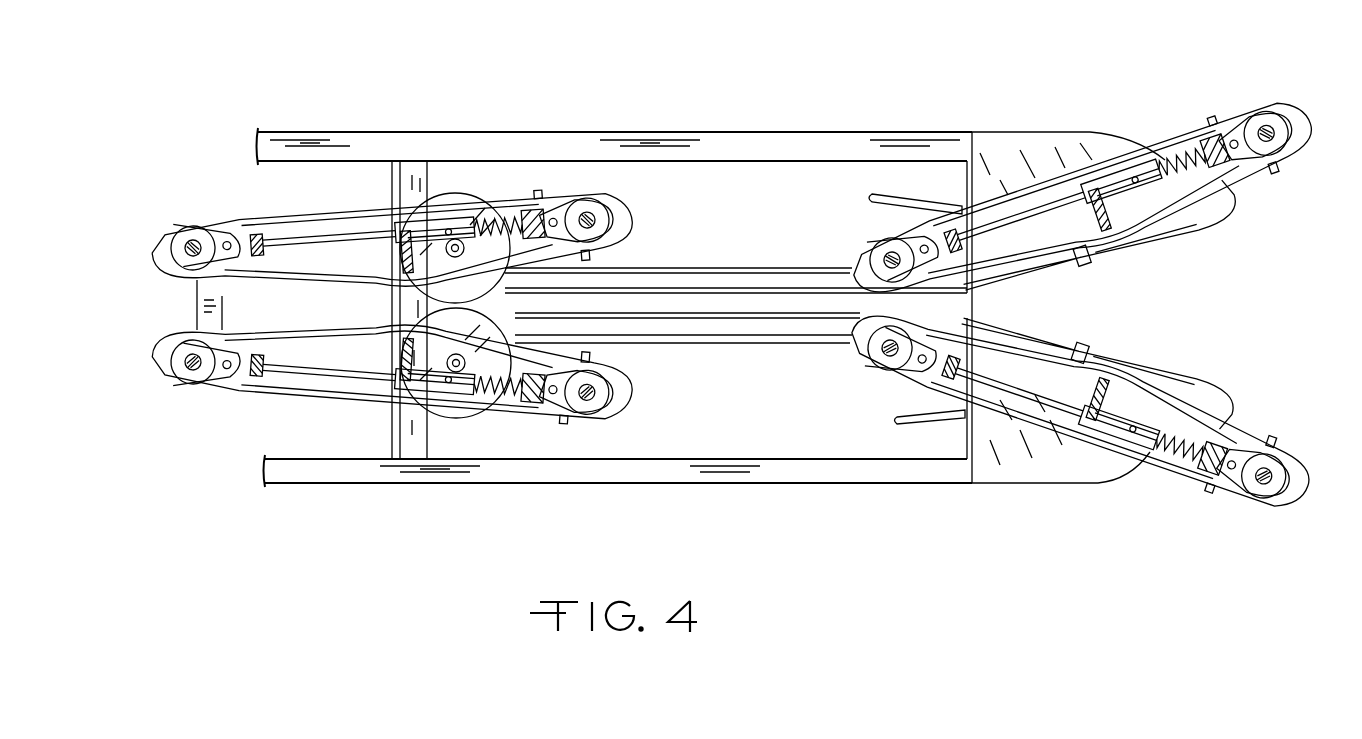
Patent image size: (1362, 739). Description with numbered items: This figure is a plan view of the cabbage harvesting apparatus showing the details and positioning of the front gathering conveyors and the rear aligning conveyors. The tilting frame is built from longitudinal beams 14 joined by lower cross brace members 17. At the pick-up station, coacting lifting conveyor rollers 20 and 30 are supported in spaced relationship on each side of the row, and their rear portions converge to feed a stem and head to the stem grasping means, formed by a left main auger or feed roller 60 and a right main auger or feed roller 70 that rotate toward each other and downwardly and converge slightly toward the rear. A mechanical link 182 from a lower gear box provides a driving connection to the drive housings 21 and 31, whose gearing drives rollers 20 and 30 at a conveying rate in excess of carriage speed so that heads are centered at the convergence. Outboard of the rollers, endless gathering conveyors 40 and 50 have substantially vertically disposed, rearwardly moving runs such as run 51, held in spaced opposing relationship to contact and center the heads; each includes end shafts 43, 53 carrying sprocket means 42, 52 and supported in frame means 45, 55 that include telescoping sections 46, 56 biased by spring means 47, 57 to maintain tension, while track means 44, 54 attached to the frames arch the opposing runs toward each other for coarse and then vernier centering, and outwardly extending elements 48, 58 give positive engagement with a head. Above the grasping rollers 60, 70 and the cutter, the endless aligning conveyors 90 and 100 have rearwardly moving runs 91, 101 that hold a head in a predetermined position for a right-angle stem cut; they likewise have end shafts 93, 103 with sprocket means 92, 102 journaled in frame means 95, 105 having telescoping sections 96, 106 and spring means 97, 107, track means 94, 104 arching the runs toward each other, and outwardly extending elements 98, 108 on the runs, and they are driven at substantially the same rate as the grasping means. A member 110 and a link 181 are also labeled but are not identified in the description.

The longitudinal beams 14 is at (783, 150).
The lower cross brace members 17 is at (413, 172).
The lifting conveyor roller 20 is at (1160, 362).
The drive housing 21 is at (1062, 462).
The lifting conveyor roller 30 is at (1178, 225).
The drive housing 31 is at (993, 143).
The gathering conveyor 40 is at (1074, 419).
The sprocket means 42 is at (888, 354).
The end shaft 43 is at (862, 360).
The track means 44 is at (1240, 420).
The frame means 45 is at (1110, 458).
The telescoping section 46 is at (1176, 464).
The spring means 47 is at (1185, 470).
The outwardly extending elements 48 is at (1265, 432).
The gathering conveyor 50 is at (1073, 172).
The run 51 is at (1246, 177).
The sprocket means 52 is at (872, 258).
The end shaft 53 is at (893, 256).
The track means 54 is at (1230, 180).
The frame means 55 is at (1107, 180).
The telescoping section 56 is at (1172, 147).
The spring means 57 is at (1155, 165).
The outwardly extending elements 58 is at (1263, 178).
The left main auger or feed roller 60 is at (735, 336).
The right main auger or feed roller 70 is at (768, 285).
The aligning conveyor 90 is at (394, 382).
The run 91 is at (217, 330).
The sprocket means 92 is at (195, 376).
The end shaft 93 is at (190, 366).
The track means 94 is at (557, 352).
The frame means 95 is at (433, 385).
The telescoping section 96 is at (487, 403).
The spring means 97 is at (515, 402).
The outwardly extending elements 98 is at (572, 426).
The aligning conveyor 100 is at (402, 200).
The run 101 is at (222, 278).
The sprocket means 102 is at (183, 244).
The end shaft 103 is at (195, 242).
The track means 104 is at (602, 257).
The frame means 105 is at (432, 228).
The telescoping section 106 is at (507, 213).
The spring means 107 is at (495, 208).
The outwardly extending elements 108 is at (555, 190).
The connecting link 110 is at (200, 318).
The lower stop rod 181 is at (936, 424).
The mechanical link 182 is at (912, 200).